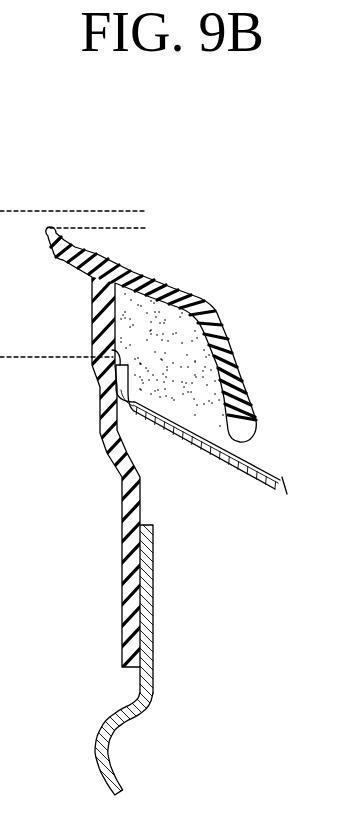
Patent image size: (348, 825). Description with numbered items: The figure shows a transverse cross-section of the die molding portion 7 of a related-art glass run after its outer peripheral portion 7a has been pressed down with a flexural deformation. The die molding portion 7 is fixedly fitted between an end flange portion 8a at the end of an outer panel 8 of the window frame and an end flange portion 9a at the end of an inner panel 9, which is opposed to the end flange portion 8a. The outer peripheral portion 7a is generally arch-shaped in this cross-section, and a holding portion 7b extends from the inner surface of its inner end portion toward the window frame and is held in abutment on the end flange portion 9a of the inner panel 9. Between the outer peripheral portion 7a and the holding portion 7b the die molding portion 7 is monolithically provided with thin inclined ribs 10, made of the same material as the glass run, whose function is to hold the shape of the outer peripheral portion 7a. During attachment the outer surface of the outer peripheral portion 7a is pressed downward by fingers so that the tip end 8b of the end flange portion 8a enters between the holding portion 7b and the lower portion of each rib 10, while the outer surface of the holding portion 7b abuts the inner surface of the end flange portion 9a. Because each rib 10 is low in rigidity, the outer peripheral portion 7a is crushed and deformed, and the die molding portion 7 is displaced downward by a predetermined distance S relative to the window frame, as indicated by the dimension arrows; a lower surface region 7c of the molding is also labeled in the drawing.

The predetermined distance S is at (124, 253).
The die molding portion 7 is at (181, 280).
The outer peripheral portion 7a is at (133, 277).
The holding portion 7b is at (118, 472).
The lower surface portion 7c is at (172, 473).
The outer panel 8 is at (268, 456).
The end flange portion 8a is at (152, 418).
The tip end 8b is at (90, 347).
The inner panel 9 is at (158, 695).
The end flange portion 9a is at (153, 584).
The rib 10 is at (177, 332).